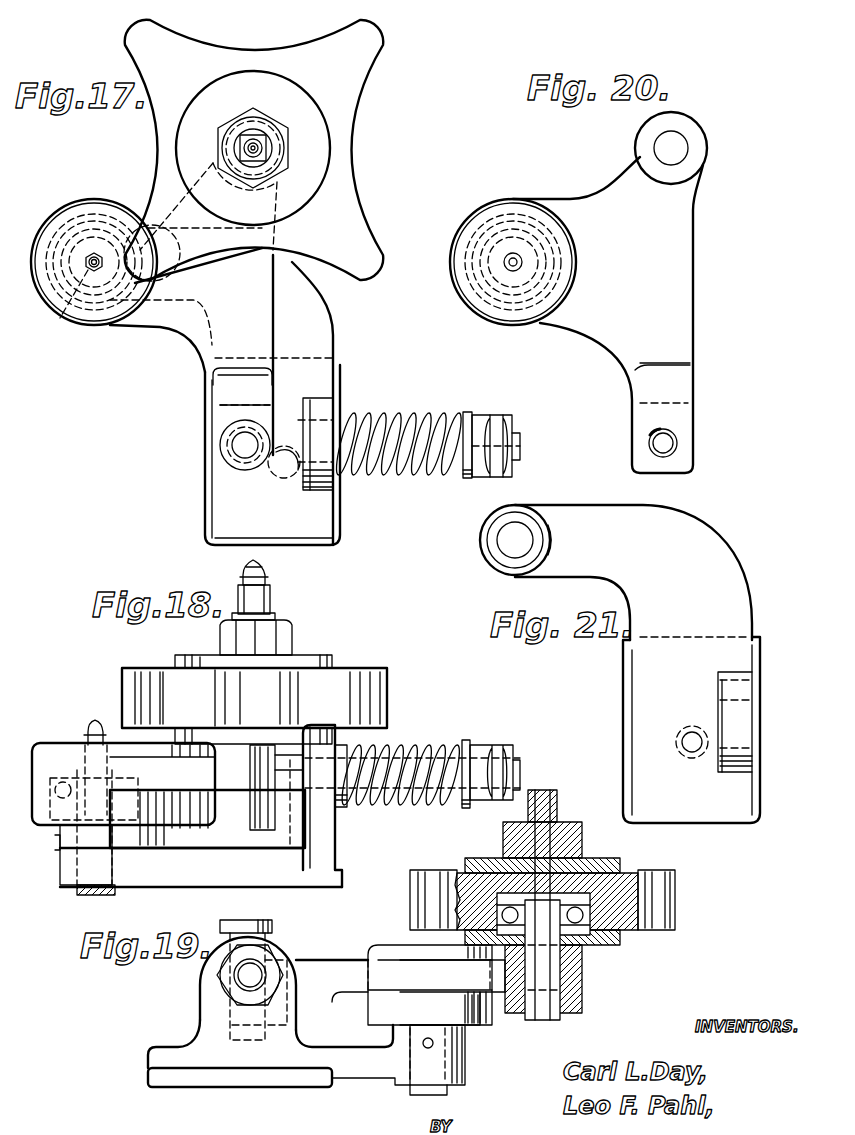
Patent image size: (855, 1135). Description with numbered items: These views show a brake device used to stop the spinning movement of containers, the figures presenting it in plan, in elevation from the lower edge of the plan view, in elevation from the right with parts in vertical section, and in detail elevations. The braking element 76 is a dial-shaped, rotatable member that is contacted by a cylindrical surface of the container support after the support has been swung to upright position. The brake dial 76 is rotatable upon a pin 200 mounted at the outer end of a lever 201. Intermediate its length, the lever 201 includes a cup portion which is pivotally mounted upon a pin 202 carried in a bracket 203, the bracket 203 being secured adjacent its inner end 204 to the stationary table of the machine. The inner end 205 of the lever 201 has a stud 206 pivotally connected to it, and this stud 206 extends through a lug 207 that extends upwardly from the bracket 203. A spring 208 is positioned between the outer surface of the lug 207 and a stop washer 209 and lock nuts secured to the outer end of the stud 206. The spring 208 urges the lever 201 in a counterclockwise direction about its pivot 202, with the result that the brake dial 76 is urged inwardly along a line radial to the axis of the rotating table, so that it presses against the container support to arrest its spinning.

In FIG. 17, the braking element 76 is at (420, 195).
In FIG. 18, the braking element 76 is at (390, 690).
In FIG. 17, the pin 200 is at (288, 142).
In FIG. 18, the pin 200 is at (582, 985).
In FIG. 17, the lever 201 is at (258, 310).
In FIG. 20, the lever 201 is at (665, 288).
In FIG. 18, the lever 201 is at (179, 778).
In FIG. 19, the lever 201 is at (345, 965).
In FIG. 17, the pin 202 is at (70, 322).
In FIG. 21, the pin 202 is at (515, 557).
In FIG. 18, the pin 202 is at (92, 895).
In FIG. 17, the bracket 203 is at (342, 362).
In FIG. 21, the bracket 203 is at (483, 525).
In FIG. 18, the bracket 203 is at (68, 860).
In FIG. 19, the bracket 203 is at (378, 1060).
In FIG. 17, the inner end 204 is at (310, 528).
In FIG. 21, the inner end 204 is at (683, 795).
In FIG. 18, the inner end 204 is at (305, 868).
In FIG. 19, the inner end 204 is at (172, 1077).
In FIG. 17, the inner end 205 is at (222, 466).
In FIG. 20, the inner end 205 is at (641, 462).
In FIG. 18, the inner end 205 is at (275, 815).
In FIG. 19, the inner end 205 is at (308, 930).
In FIG. 17, the stud 206 is at (296, 452).
In FIG. 18, the stud 206 is at (422, 800).
In FIG. 19, the stud 206 is at (253, 978).
In FIG. 17, the lug 207 is at (320, 478).
In FIG. 21, the lug 207 is at (738, 765).
In FIG. 18, the lug 207 is at (318, 813).
In FIG. 19, the lug 207 is at (205, 1017).
In FIG. 17, the spring 208 is at (383, 425).
In FIG. 18, the spring 208 is at (395, 746).
In FIG. 17, the stop washer 209 is at (468, 414).
In FIG. 18, the stop washer 209 is at (467, 745).
In FIG. 19, the stop washer 209 is at (216, 963).